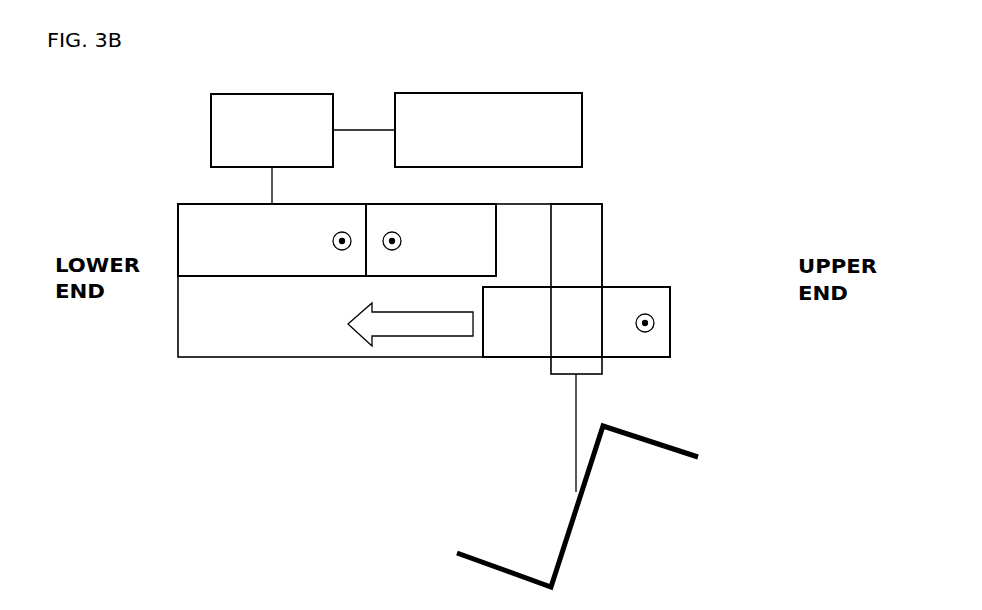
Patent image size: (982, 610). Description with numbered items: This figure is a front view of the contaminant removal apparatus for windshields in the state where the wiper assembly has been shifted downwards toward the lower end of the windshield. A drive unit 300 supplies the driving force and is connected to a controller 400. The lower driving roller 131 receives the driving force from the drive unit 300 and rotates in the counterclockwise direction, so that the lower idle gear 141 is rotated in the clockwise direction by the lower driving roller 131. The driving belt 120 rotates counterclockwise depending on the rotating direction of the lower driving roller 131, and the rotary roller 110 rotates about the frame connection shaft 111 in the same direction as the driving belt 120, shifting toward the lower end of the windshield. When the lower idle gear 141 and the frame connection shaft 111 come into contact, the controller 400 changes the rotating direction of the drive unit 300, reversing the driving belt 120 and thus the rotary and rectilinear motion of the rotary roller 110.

The rotary roller 110 is at (672, 305).
The frame connection shaft 111 is at (583, 243).
The driving belt 120 is at (223, 357).
The lower driving roller 131 is at (185, 261).
The lower idle gear 141 is at (420, 259).
The drive unit 300 is at (212, 130).
The controller 400 is at (582, 127).